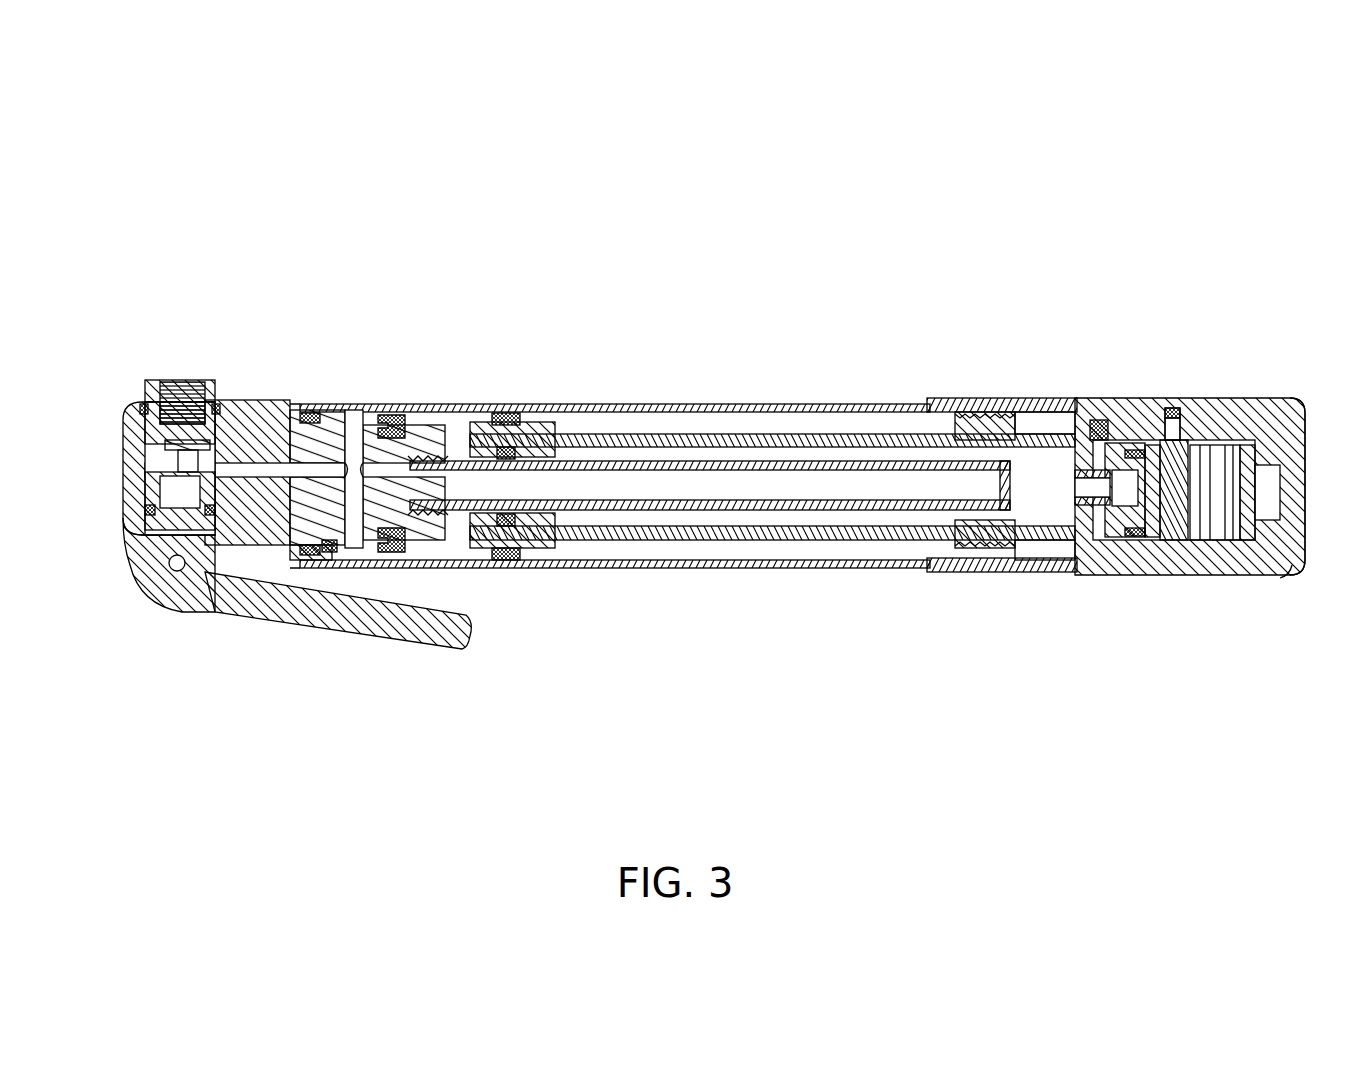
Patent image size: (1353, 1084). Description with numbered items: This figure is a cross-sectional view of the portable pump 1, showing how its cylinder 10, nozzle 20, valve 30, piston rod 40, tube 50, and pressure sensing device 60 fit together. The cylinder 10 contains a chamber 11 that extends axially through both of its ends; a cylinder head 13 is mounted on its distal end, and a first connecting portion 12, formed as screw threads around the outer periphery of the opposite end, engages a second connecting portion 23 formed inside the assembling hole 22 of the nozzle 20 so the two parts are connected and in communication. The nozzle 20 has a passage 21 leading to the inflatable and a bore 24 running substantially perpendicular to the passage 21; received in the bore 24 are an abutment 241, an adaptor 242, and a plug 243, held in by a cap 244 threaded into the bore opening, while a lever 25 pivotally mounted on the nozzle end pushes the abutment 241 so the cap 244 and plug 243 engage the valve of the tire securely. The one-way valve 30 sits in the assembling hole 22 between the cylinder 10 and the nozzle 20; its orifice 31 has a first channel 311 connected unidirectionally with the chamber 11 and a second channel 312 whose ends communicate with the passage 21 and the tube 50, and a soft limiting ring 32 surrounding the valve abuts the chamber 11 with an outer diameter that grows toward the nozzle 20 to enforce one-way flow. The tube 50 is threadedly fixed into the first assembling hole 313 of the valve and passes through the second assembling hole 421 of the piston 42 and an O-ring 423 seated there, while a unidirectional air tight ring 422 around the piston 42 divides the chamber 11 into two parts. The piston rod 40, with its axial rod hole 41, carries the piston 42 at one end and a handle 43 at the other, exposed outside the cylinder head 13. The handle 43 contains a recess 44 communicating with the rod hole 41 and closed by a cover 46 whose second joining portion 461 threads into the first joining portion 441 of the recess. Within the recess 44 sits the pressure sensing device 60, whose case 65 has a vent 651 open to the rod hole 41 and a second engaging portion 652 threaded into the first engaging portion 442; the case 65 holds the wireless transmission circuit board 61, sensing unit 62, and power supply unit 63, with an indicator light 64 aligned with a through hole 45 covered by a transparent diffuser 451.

The portable pump 1 is at (810, 196).
The cylinder 10 is at (683, 470).
The chamber 11 is at (772, 420).
The first connecting portion 12 is at (340, 404).
The cylinder head 13 is at (1000, 570).
The nozzle 20 is at (264, 484).
The passage 21 is at (258, 400).
The assembling hole 22 is at (275, 542).
The second connecting portion 23 is at (330, 552).
The bore 24 is at (139, 444).
The abutment 241 is at (152, 525).
The adaptor 242 is at (152, 448).
The plug 243 is at (146, 408).
The cap 244 is at (152, 392).
The lever 25 is at (350, 622).
The valve 30 is at (412, 454).
The orifice 31 is at (378, 498).
The first channel 311 is at (352, 410).
The second channel 312 is at (362, 478).
The first assembling hole 313 is at (447, 425).
The limiting ring 32 is at (390, 418).
The piston rod 40 is at (772, 487).
The rod hole 41 is at (690, 522).
The piston 42 is at (545, 480).
The second assembling hole 421 is at (560, 512).
The unidirectional air tight ring 422 is at (512, 413).
The O-ring 423 is at (518, 446).
The handle 43 is at (985, 412).
The recess 44 is at (1195, 471).
The first joining portion 441 is at (1290, 578).
The first engaging portion 442 is at (1096, 428).
The through hole 45 is at (1170, 410).
The diffuser 451 is at (1182, 440).
The cover 46 is at (1300, 412).
The second joining portion 461 is at (1266, 432).
The tube 50 is at (770, 510).
The pressure sensing device 60 is at (1173, 546).
The wireless transmission circuit board 61 is at (1198, 566).
The sensing unit 62 is at (1164, 566).
The power supply unit 63 is at (1248, 570).
The indicator light 64 is at (1148, 445).
The case 65 is at (1110, 485).
The vent 651 is at (1088, 522).
The second engaging portion 652 is at (1138, 545).